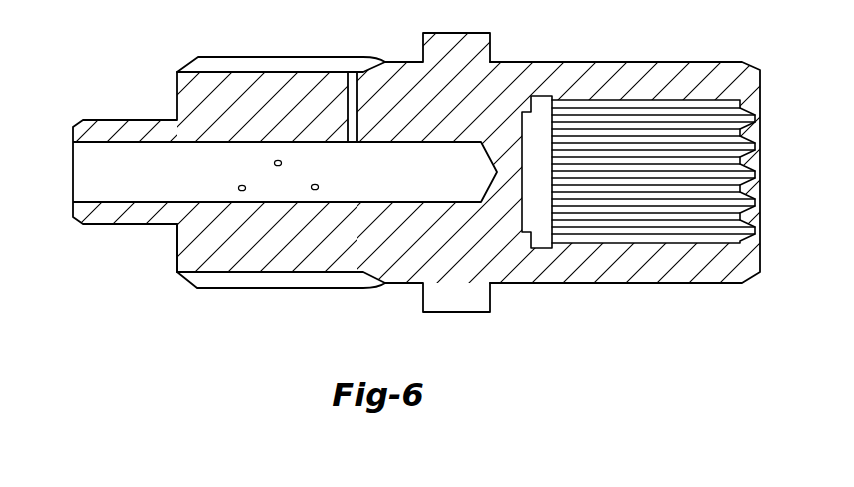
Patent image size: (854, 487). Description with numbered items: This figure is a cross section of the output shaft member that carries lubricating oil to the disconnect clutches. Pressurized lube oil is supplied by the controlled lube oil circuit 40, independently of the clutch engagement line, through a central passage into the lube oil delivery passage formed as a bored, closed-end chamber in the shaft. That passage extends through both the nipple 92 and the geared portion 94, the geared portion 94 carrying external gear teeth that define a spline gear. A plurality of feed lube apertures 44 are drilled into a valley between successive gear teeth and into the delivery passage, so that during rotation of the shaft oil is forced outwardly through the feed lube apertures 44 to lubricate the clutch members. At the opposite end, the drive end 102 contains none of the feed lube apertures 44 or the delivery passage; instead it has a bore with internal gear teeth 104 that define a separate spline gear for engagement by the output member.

The controlled lube oil circuit 40 is at (100, 153).
The nipple 92 is at (150, 120).
The geared portion 94 is at (178, 243).
The feed lube apertures 44 is at (281, 162).
The drive end 102 is at (627, 268).
The internal gear teeth 104 is at (618, 150).